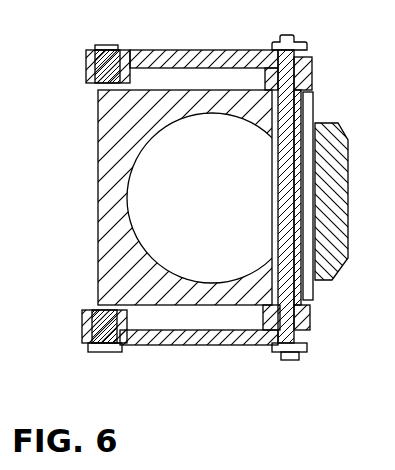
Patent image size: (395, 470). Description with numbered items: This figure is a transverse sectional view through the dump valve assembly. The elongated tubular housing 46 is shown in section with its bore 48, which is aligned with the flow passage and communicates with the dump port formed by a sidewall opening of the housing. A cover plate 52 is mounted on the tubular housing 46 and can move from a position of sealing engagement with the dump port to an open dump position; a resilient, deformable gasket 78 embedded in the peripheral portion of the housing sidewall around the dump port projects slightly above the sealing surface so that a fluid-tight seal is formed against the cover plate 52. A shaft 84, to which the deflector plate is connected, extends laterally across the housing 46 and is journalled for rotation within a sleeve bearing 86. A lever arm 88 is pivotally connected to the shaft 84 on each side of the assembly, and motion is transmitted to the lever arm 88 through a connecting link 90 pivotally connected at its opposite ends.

The tubular housing 46 is at (173, 294).
The bore 48 is at (172, 272).
The cover plate 52 is at (329, 279).
The resilient gasket 78 is at (314, 121).
The shaft 84 is at (291, 361).
The sleeve bearing 86 is at (309, 346).
The lever arm 88 is at (181, 59).
The connecting link 90 is at (87, 73).